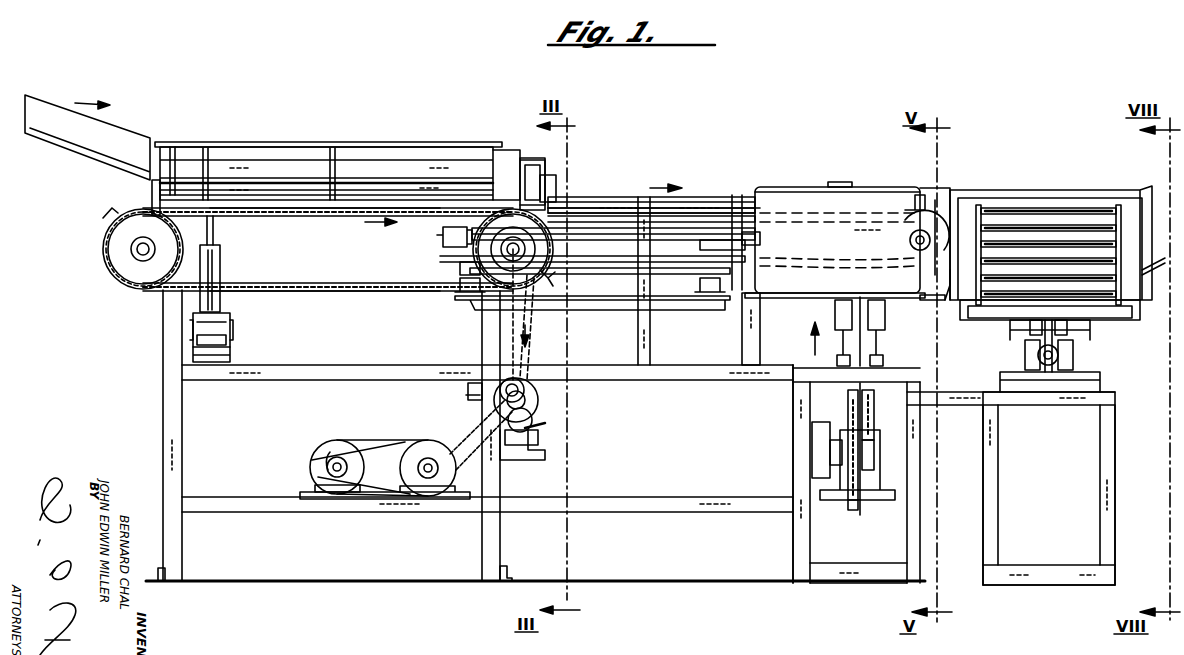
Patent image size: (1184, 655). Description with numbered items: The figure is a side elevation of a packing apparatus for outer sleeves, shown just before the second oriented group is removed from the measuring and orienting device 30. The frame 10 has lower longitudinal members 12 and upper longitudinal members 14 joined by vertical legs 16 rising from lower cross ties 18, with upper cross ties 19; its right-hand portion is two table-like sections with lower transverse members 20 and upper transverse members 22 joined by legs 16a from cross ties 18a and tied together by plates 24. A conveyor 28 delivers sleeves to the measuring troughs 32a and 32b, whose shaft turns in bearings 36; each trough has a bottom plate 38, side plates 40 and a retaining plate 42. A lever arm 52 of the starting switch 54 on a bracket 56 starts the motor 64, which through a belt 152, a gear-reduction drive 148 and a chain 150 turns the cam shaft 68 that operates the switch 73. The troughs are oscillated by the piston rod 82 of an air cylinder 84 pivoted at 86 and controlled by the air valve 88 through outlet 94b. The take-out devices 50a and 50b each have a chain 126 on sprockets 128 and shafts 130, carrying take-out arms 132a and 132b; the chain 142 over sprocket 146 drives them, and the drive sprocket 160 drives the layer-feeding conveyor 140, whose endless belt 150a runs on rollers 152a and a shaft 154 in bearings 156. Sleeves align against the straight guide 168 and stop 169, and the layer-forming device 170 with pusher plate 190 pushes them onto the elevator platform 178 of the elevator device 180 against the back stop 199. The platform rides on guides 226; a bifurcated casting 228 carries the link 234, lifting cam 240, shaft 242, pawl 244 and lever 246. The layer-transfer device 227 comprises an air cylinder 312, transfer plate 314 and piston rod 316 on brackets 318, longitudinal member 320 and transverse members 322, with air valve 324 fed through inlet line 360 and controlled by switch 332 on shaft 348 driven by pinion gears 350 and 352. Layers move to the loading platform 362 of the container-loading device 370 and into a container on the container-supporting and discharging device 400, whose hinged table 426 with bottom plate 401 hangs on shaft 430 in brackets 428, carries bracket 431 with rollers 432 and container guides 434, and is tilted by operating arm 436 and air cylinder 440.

The frame 10 is at (150, 392).
The lower longitudinal members 12 is at (302, 510).
The upper longitudinal members 14 is at (255, 380).
The vertical legs 16 is at (165, 432).
The legs 16a is at (795, 545).
The lower cross ties 18 is at (162, 570).
The cross ties 18a is at (860, 572).
The upper cross ties 19 is at (228, 355).
The lower transverse members 20 is at (880, 523).
The upper transverse members 22 is at (1002, 394).
The plates 24 is at (968, 394).
The conveyor 28 is at (110, 140).
The measuring and orienting device 30 is at (296, 130).
The measuring trough 32a is at (348, 150).
The measuring trough 32b is at (205, 160).
The bearings 36 is at (155, 190).
The longitudinal bottom plate 38 is at (410, 172).
The side plates 40 is at (372, 158).
The retaining plate 42 is at (238, 143).
The take-out device 50a is at (278, 209).
The take-out device 50b is at (331, 302).
The lever arm 52 is at (530, 165).
The starting switch 54 is at (548, 178).
The bracket 56 is at (545, 175).
The motor 64 is at (328, 452).
The cam shaft 68 is at (535, 408).
The switch 73 is at (530, 460).
The piston rod 82 is at (215, 238).
The air cylinder 84 is at (222, 265).
The pivot 86 is at (228, 335).
The solenoid-operated air valve 88 is at (215, 318).
The high-pressure air outlet 94b is at (214, 277).
The chain 126 is at (372, 292).
The sprockets 128 is at (115, 250).
The shafts 130 is at (140, 256).
The take-out arm 132a is at (548, 283).
The take-out arm 132b is at (102, 222).
The layer-feeding conveyor 140 is at (606, 200).
The chain 142 is at (530, 352).
The sprocket 146 is at (540, 437).
The gear-reduction drive 148 is at (448, 442).
The chain 150 is at (474, 425).
The endless belt 150a is at (576, 210).
The belt 152 is at (376, 448).
The rollers 152a is at (962, 176).
The shaft 154 is at (915, 248).
The bearings 156 is at (915, 238).
The drive sprocket 160 is at (485, 306).
The straight guide 168 is at (692, 200).
The stop 169 is at (927, 195).
The layer-forming device 170 is at (772, 178).
The elevator platform 178 is at (810, 296).
The elevator device 180 is at (830, 408).
The pusher plate 190 is at (805, 187).
The back stop 199 is at (805, 195).
The guides 226 is at (860, 335).
The layer-transfer device 227 is at (430, 244).
The bifurcated casting 228 is at (890, 477).
The link 234 is at (856, 377).
The lifting cam 240 is at (858, 506).
The horizontal shaft 242 is at (892, 457).
The pawl 244 is at (812, 430).
The lever 246 is at (830, 442).
The air cylinder 312 is at (672, 296).
The transfer plate 314 is at (735, 197).
The piston rod 316 is at (748, 245).
The brackets 318 is at (470, 260).
The longitudinal member 320 is at (625, 300).
The transverse members 322 is at (570, 282).
The solenoid operated air-valve 324 is at (443, 232).
The double-contact switch 332 is at (466, 390).
The shaft 348 is at (527, 391).
The pinion gear 350 is at (540, 426).
The pinion gear 352 is at (522, 378).
The inlet line 360 is at (470, 270).
The loading platform 362 is at (922, 300).
The container-loading device 370 is at (1093, 182).
The container-supporting and discharging device 400 is at (1118, 318).
The bottom plate 401 is at (1100, 372).
The hinged table 426 is at (1000, 333).
The brackets 428 is at (1060, 355).
The shaft 430 is at (1032, 328).
The bracket 431 is at (978, 215).
The rollers 432 is at (1032, 240).
The container guides 434 is at (948, 298).
The operating arm 436 is at (1030, 345).
The air cylinder 440 is at (1054, 350).